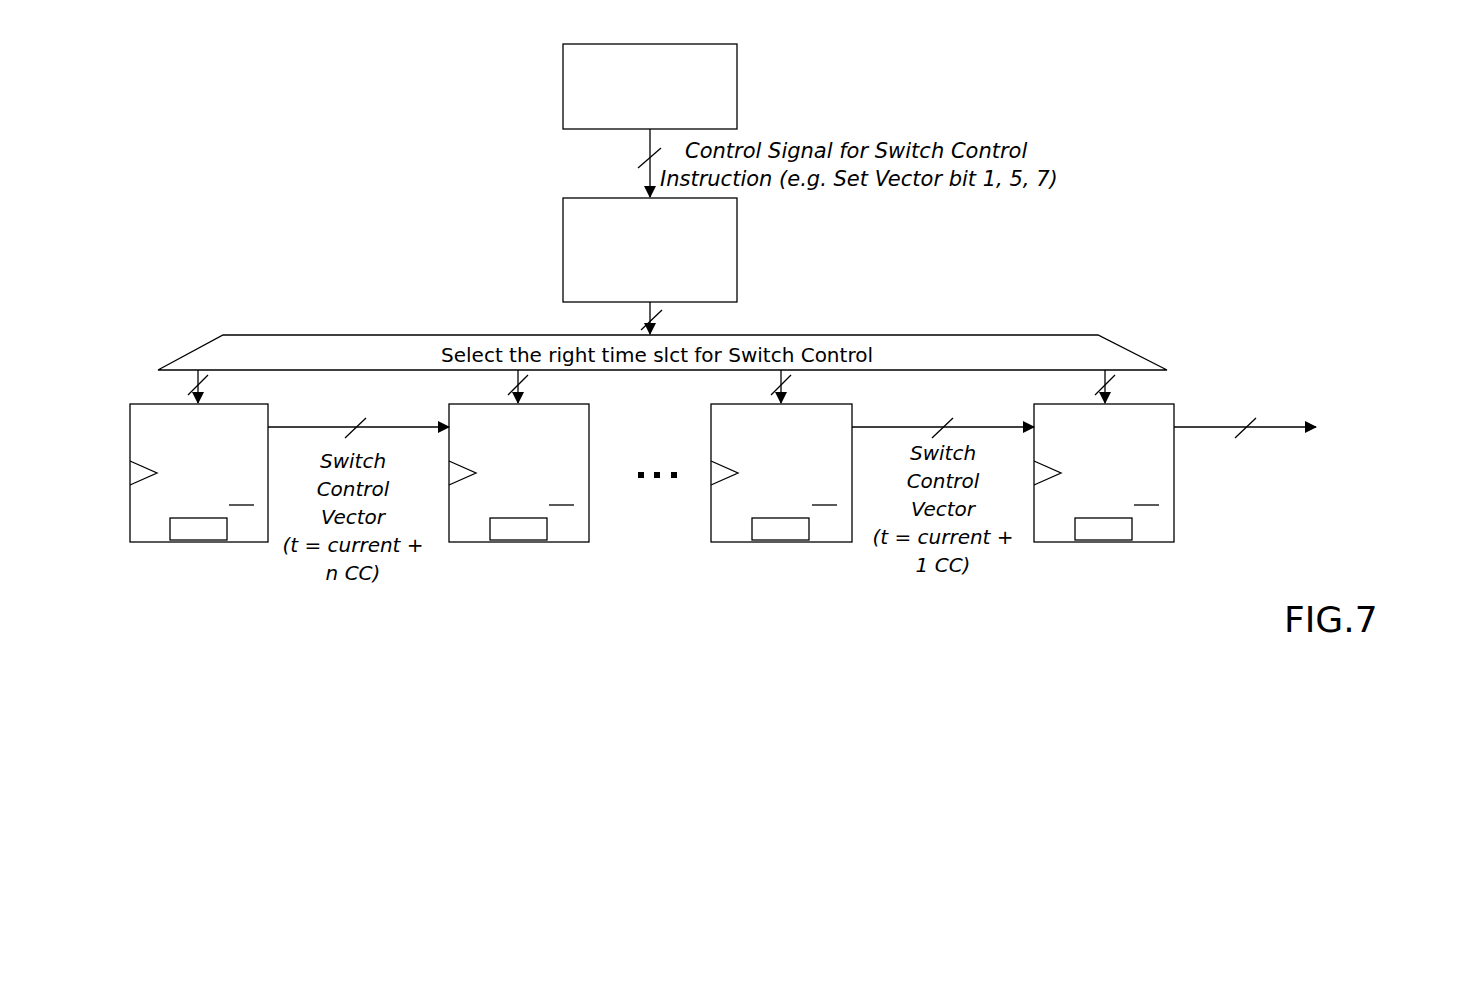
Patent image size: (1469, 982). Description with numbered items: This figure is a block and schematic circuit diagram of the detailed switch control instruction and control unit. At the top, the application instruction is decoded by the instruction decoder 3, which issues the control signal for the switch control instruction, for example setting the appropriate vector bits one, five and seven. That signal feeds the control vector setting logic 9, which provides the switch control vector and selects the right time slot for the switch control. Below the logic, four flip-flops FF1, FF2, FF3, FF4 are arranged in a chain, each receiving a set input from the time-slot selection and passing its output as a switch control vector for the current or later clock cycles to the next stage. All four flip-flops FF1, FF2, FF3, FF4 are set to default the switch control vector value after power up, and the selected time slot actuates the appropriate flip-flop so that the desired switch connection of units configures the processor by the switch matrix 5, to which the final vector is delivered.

The instruction decoder 3 is at (741, 79).
The control vector setting logic 9 is at (741, 240).
The switch matrix 5 is at (1305, 477).
The flip-flop FF1 is at (270, 400).
The flip-flop FF2 is at (591, 400).
The flip-flop FF3 is at (854, 400).
The flip-flop FF4 is at (1168, 400).